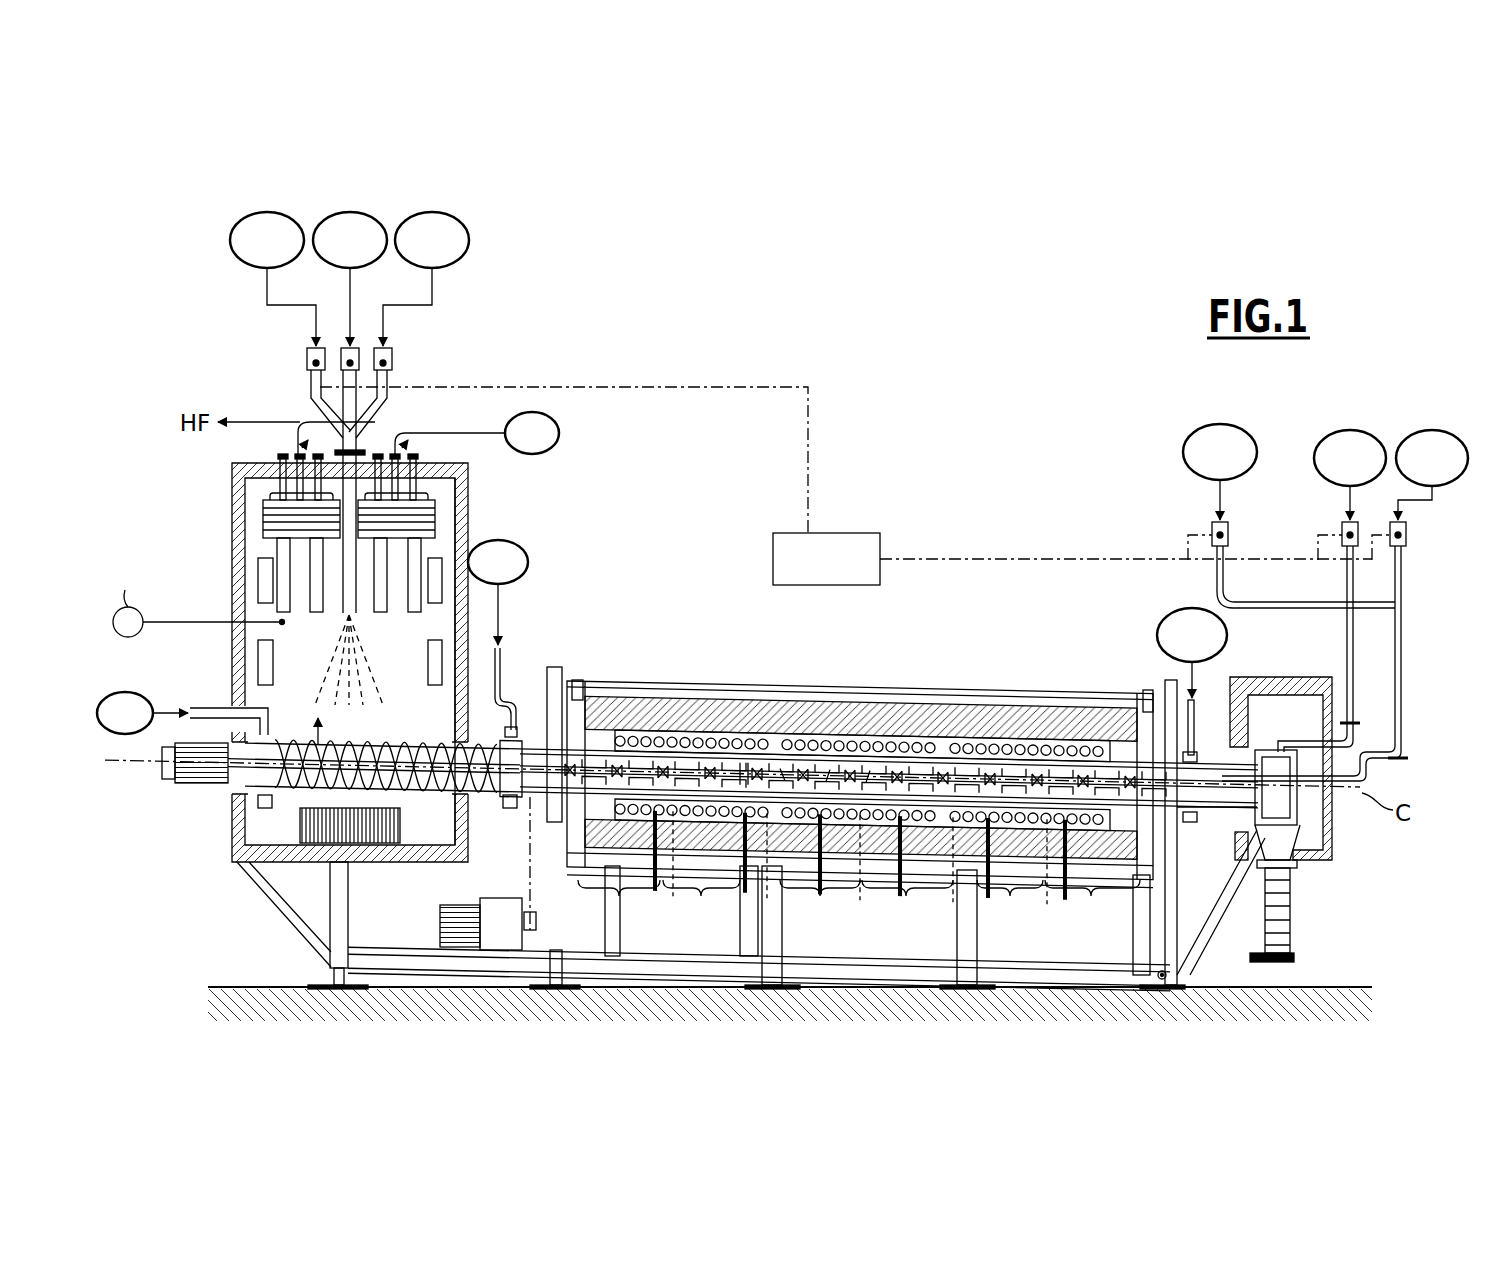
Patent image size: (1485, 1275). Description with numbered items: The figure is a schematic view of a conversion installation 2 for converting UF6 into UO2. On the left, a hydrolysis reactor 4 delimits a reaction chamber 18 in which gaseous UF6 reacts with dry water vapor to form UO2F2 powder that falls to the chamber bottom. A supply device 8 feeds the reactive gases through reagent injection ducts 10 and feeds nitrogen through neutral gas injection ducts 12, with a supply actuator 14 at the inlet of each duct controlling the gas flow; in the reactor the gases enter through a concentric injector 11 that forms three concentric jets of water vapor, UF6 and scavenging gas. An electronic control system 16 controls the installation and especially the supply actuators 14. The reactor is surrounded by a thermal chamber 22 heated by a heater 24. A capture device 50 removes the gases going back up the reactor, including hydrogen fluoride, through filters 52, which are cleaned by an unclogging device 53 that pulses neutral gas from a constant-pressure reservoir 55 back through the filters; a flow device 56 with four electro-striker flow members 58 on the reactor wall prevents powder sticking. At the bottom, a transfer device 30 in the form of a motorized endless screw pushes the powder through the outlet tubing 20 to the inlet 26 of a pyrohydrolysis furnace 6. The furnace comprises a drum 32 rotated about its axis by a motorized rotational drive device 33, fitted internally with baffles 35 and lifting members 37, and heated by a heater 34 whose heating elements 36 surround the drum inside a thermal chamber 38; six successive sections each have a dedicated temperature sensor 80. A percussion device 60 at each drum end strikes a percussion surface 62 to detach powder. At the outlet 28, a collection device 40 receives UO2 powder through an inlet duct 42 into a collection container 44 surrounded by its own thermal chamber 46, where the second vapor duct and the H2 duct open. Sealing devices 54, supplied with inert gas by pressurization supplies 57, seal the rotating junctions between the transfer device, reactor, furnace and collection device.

The conversion installation 2 is at (1020, 355).
The hydrolysis reactor 4 is at (320, 616).
The pyrohydrolysis furnace 6 is at (860, 770).
The supply device 8 is at (498, 237).
The reagent injection ducts 10 is at (347, 393).
The concentric injector 11 is at (347, 562).
The neutral gas injection ducts 12 is at (378, 410).
The supply actuator 14 is at (310, 360).
The electronic control system 16 is at (826, 559).
The reaction chamber 18 is at (310, 783).
The outlet tubing 20 is at (392, 808).
The thermal chamber 22 is at (232, 518).
The heater 24 is at (270, 832).
The inlet 26 is at (533, 740).
The outlet 28 is at (1145, 857).
The transfer device 30 is at (193, 788).
The drum 32 is at (968, 742).
The motorized rotational drive device 33 is at (455, 947).
The heater 34 is at (763, 722).
The baffles 35 is at (753, 763).
The heating elements 36 is at (690, 757).
The lifting members 37 is at (870, 765).
The thermal chamber 38 is at (1030, 725).
The collection device 40 is at (1302, 837).
The inlet duct 42 is at (1215, 810).
The collection container 44 is at (1290, 870).
The thermal chamber 46 is at (1328, 830).
The capture device 50 is at (207, 498).
The filters 52 is at (323, 592).
The unclogging device 53 is at (485, 410).
The sealing devices 54 is at (247, 807).
The reservoir 55 is at (560, 433).
The flow device 56 is at (447, 550).
The pressurization supplies 57 is at (197, 720).
The flow members 58 is at (262, 565).
The percussion device 60 is at (560, 668).
The percussion surface 62 is at (583, 696).
The temperature sensor 80 is at (652, 862).